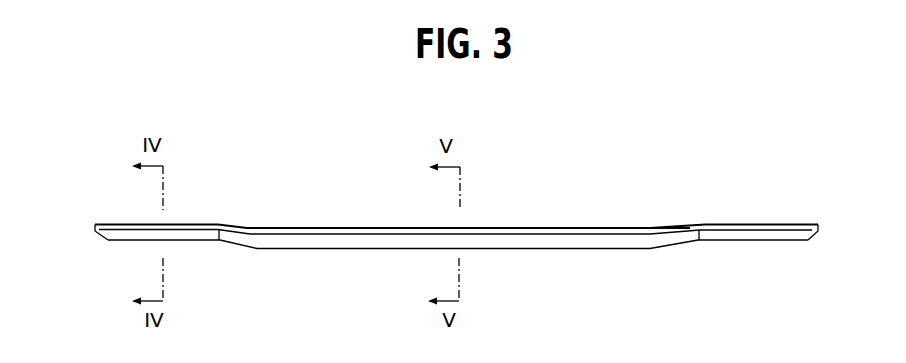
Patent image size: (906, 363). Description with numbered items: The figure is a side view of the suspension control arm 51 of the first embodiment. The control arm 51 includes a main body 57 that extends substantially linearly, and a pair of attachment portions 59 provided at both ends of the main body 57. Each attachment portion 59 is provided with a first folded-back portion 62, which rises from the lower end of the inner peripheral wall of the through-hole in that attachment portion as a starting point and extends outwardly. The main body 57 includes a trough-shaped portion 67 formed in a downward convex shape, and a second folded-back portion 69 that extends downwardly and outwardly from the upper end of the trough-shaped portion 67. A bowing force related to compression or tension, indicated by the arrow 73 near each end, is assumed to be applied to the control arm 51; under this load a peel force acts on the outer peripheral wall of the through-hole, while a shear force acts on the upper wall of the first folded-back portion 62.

The control arm 51 is at (602, 188).
The main body 57 is at (500, 226).
The attachment portion 59 is at (192, 225).
The first folded-back portion 62 is at (182, 230).
The trough-shaped portion 67 is at (385, 248).
The second folded-back portion 69 is at (492, 248).
The arrow 73 is at (262, 215).